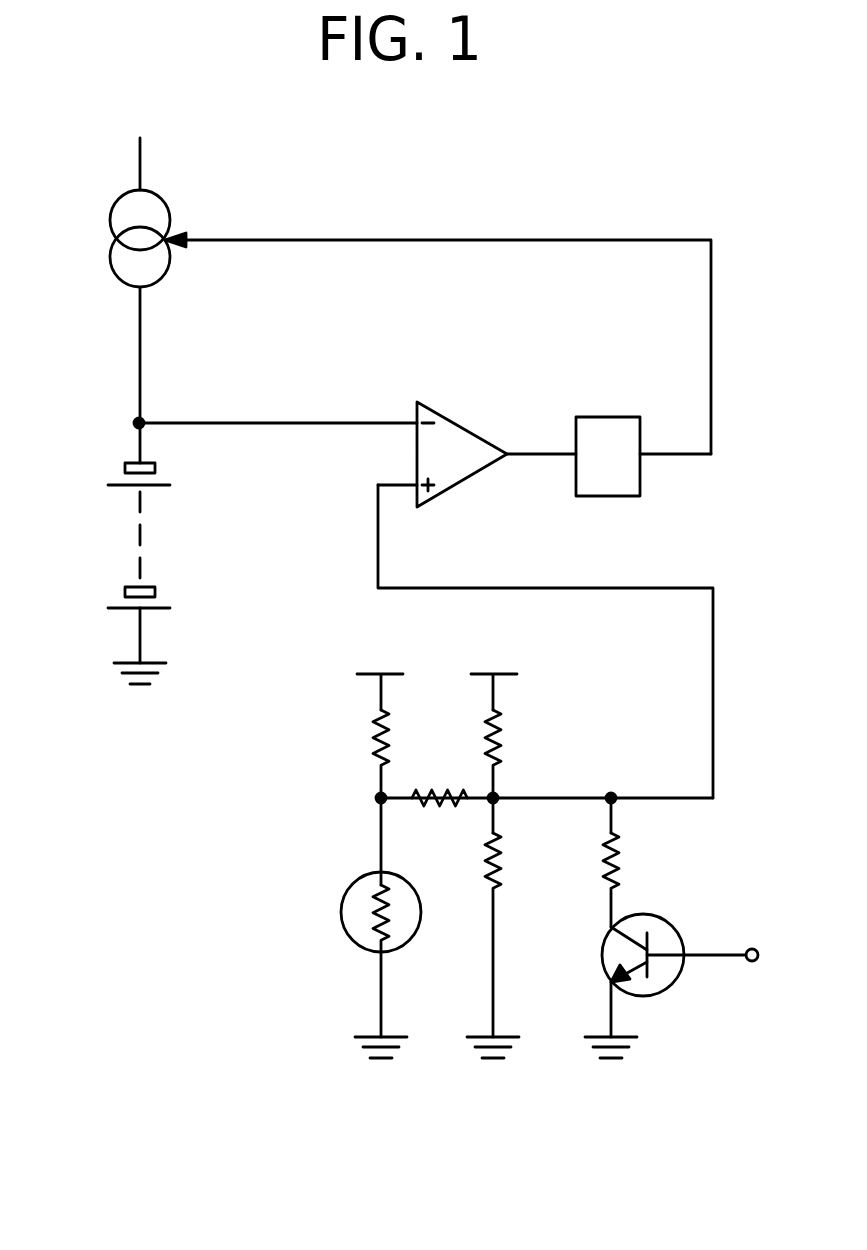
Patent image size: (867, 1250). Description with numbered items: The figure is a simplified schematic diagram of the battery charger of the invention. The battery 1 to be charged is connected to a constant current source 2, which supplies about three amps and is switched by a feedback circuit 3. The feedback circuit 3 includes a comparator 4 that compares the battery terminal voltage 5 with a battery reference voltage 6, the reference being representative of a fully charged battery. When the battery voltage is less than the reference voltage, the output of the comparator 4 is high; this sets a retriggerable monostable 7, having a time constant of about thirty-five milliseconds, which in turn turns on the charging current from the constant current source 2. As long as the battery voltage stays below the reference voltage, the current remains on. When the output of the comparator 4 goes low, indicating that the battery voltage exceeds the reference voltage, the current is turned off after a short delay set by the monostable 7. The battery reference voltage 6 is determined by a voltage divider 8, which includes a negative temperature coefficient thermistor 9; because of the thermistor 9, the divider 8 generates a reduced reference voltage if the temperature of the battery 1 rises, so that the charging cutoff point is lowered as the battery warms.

The battery 1 is at (153, 609).
The constant current source 2 is at (122, 204).
The feedback circuit 3 is at (488, 412).
The comparator 4 is at (465, 465).
The battery terminal voltage 5 is at (252, 423).
The battery reference voltage 6 is at (550, 590).
The retriggerable monostable 7 is at (632, 486).
The voltage divider 8 is at (437, 762).
The negative temperature coefficient thermistor 9 is at (345, 922).